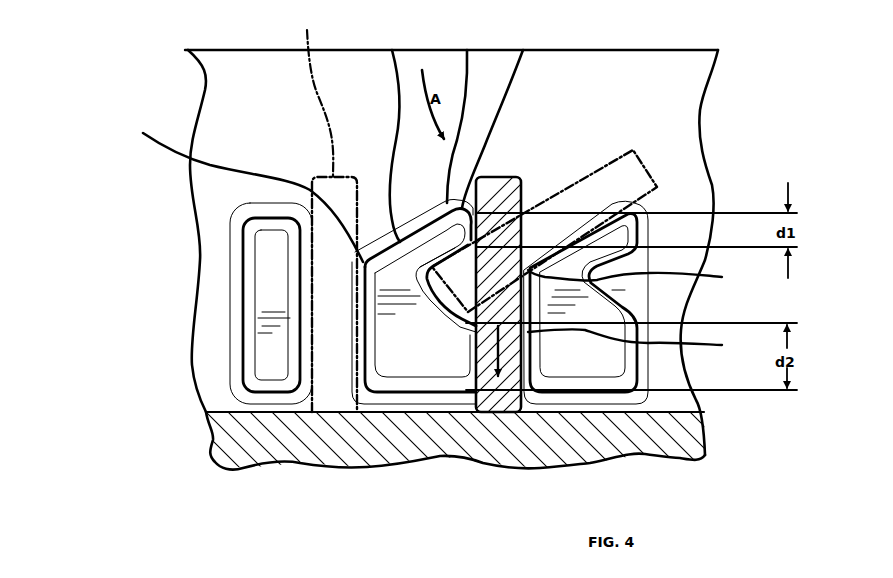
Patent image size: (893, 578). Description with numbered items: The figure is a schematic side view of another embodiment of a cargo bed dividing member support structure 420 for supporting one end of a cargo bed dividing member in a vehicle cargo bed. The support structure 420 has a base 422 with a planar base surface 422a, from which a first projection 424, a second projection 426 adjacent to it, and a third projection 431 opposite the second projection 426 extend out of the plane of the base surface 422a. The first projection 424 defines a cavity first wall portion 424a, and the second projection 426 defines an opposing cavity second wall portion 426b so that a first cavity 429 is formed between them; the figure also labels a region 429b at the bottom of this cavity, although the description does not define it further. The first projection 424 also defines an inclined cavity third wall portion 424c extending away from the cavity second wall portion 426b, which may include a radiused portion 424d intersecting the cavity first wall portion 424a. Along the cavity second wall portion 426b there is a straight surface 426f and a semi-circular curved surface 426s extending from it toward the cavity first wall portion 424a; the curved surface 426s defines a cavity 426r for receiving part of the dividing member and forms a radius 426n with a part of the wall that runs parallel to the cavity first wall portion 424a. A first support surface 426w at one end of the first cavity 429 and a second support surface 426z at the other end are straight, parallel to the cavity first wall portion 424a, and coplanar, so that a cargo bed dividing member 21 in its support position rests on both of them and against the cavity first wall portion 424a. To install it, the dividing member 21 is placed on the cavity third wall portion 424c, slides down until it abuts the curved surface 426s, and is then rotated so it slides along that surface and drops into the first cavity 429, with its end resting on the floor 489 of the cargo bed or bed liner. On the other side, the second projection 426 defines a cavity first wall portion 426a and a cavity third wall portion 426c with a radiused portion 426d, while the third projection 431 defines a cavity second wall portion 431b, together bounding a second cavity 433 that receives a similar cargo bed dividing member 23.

The cargo bed dividing member support structure 420 is at (136, 84).
The base 422 is at (240, 77).
The base surface 422a is at (623, 108).
The first projection 424 is at (567, 370).
The cavity first wall portion 424a is at (644, 341).
The cavity third wall portion 424c is at (590, 225).
The radiused portion 424d is at (645, 276).
The second projection 426 is at (385, 337).
The cavity first wall portion 426a is at (362, 285).
The cavity second wall portion 426b is at (473, 337).
The cavity third wall portion 426c is at (385, 126).
The radiused portion 426d is at (245, 188).
The straight surface 426f is at (462, 106).
The radius 426n is at (450, 342).
The cavity 426r is at (443, 290).
The curved surface 426s is at (437, 292).
The first support surface 426w is at (504, 109).
The second support surface 426z is at (462, 353).
The first cavity 429 is at (527, 397).
The base region under post 429b is at (497, 402).
The third projection 431 is at (271, 238).
The cavity second wall portion 431b is at (303, 318).
The second cavity 433 is at (327, 372).
The floor 489 is at (228, 412).
The cargo bed dividing member 21 is at (490, 178).
The cargo bed dividing member 23 is at (328, 211).